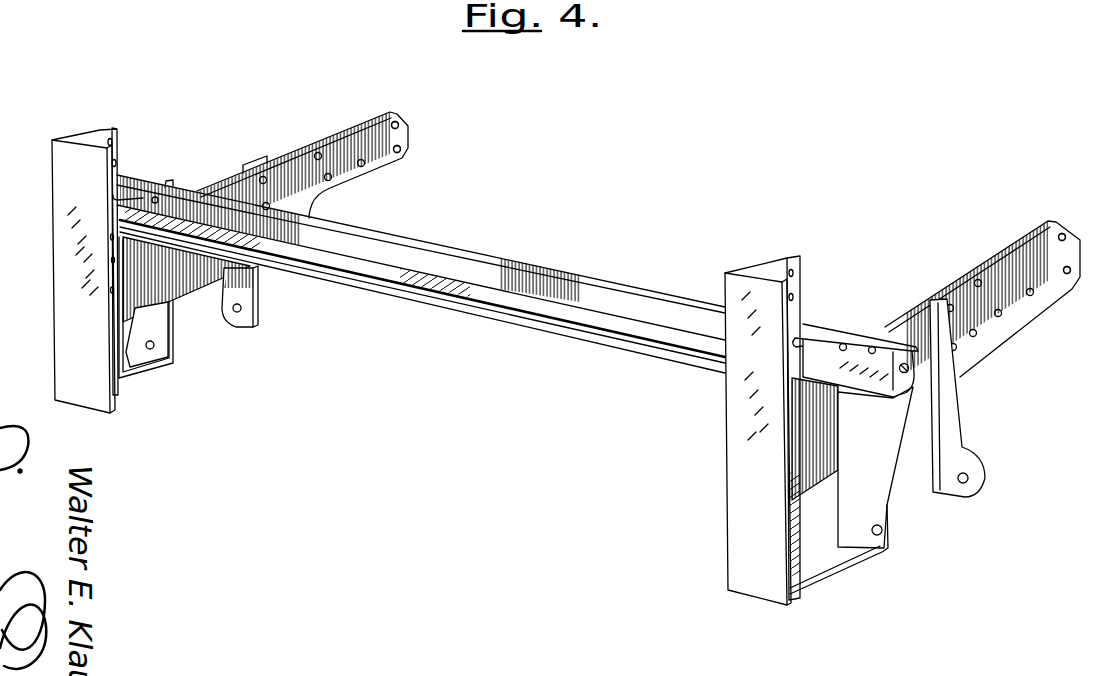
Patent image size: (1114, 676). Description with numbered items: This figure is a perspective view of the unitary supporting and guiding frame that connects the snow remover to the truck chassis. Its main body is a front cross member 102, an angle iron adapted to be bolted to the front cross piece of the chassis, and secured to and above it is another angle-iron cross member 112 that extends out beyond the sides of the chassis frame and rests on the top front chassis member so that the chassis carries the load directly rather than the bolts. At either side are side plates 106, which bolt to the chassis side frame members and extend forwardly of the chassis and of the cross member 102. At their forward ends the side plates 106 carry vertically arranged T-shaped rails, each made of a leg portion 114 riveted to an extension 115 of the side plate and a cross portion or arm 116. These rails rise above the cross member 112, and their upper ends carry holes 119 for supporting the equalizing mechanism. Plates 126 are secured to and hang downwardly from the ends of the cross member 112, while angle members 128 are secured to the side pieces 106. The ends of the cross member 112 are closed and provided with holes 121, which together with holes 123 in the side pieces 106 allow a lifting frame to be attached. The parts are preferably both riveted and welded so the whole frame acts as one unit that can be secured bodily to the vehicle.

The front cross member 102 is at (520, 324).
The side plates 106 is at (327, 140).
The cross member 112 is at (463, 262).
The leg portions 114 is at (115, 173).
The extensions 115 is at (800, 460).
The cross portions 116 is at (67, 262).
The holes 119 is at (795, 271).
The holes 121 is at (903, 363).
The holes 123 is at (403, 145).
The plates 126 is at (160, 334).
The angle members 128 is at (267, 317).